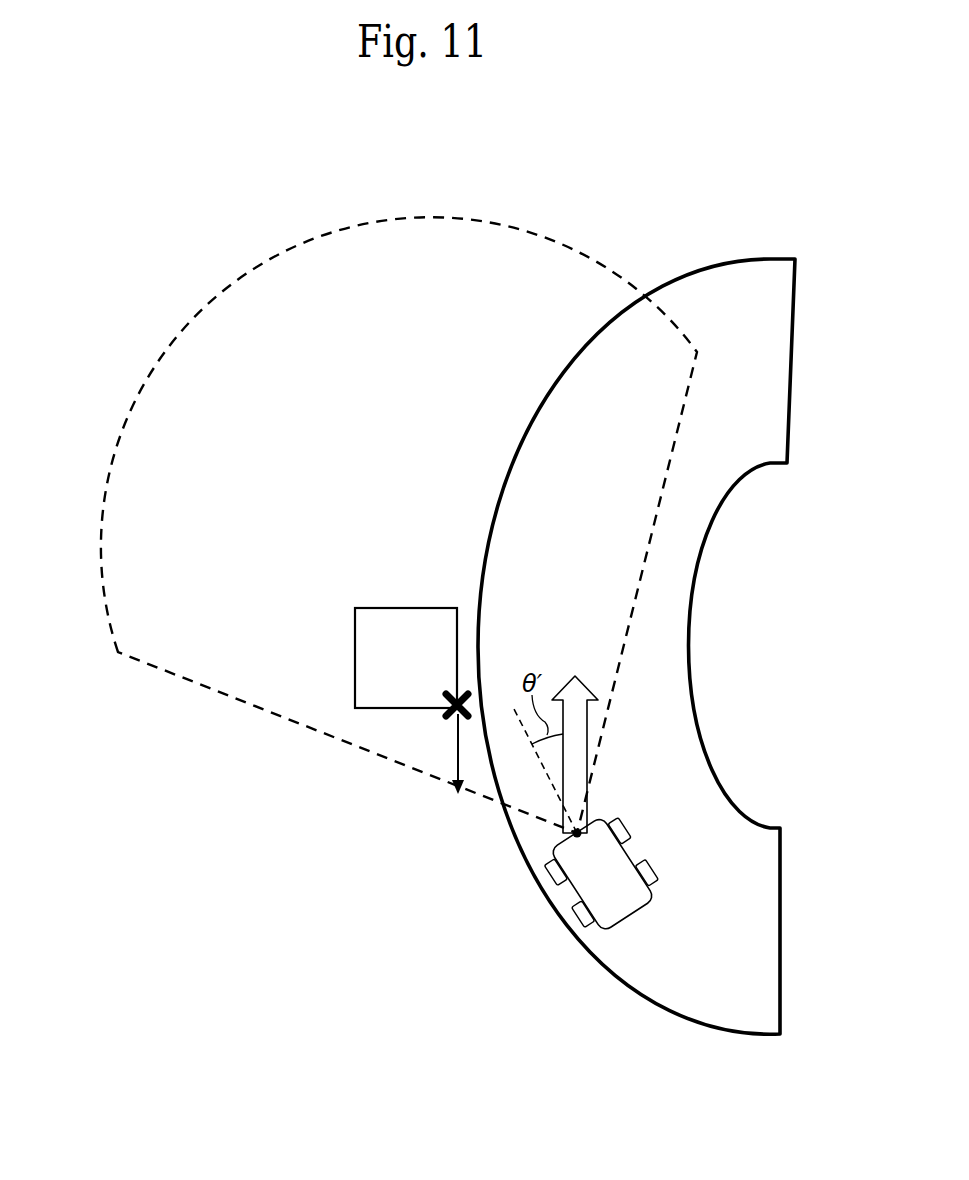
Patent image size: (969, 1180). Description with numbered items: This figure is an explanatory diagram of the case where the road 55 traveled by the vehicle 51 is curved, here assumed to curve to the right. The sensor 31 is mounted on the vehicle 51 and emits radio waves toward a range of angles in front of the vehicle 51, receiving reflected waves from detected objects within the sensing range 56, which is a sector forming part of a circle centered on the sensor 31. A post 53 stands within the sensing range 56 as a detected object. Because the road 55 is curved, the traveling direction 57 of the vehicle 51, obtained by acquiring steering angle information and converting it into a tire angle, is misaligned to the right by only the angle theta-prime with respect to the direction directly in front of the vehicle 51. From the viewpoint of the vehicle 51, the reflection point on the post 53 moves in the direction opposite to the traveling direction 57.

The sensing range 56 is at (385, 215).
The road 55 is at (683, 600).
The post 53 is at (377, 608).
The traveling direction 57 is at (630, 828).
The vehicle 51 is at (603, 928).
The sensor 31 is at (572, 838).